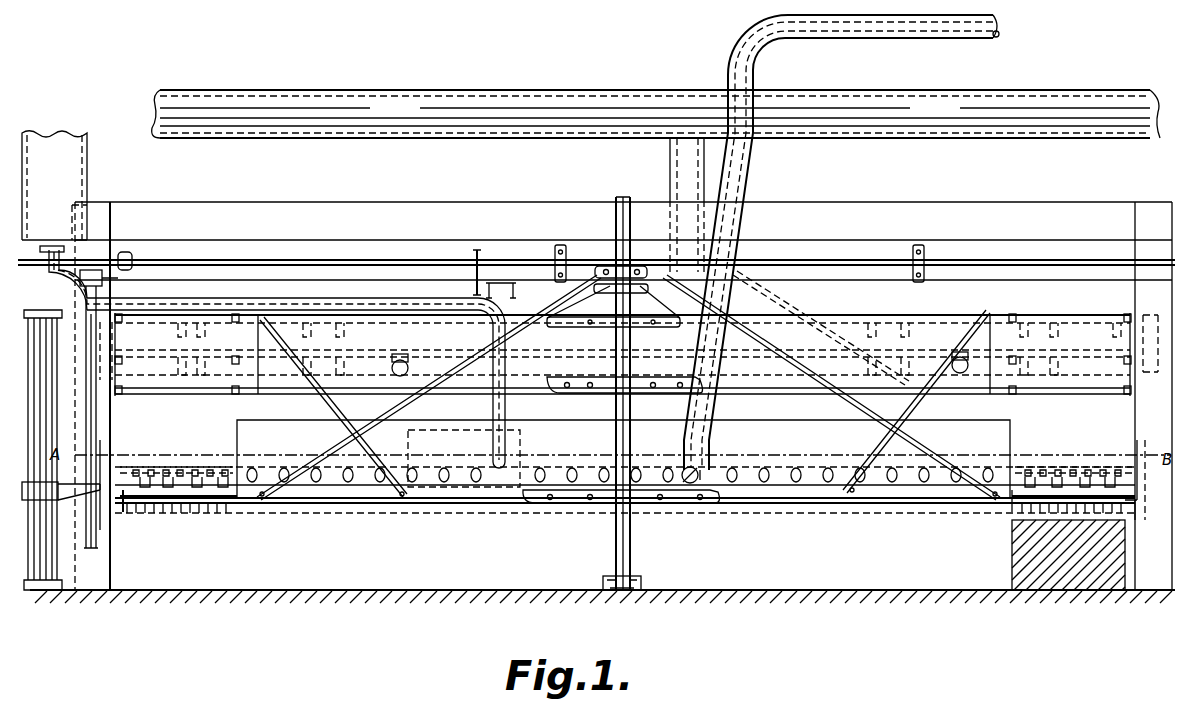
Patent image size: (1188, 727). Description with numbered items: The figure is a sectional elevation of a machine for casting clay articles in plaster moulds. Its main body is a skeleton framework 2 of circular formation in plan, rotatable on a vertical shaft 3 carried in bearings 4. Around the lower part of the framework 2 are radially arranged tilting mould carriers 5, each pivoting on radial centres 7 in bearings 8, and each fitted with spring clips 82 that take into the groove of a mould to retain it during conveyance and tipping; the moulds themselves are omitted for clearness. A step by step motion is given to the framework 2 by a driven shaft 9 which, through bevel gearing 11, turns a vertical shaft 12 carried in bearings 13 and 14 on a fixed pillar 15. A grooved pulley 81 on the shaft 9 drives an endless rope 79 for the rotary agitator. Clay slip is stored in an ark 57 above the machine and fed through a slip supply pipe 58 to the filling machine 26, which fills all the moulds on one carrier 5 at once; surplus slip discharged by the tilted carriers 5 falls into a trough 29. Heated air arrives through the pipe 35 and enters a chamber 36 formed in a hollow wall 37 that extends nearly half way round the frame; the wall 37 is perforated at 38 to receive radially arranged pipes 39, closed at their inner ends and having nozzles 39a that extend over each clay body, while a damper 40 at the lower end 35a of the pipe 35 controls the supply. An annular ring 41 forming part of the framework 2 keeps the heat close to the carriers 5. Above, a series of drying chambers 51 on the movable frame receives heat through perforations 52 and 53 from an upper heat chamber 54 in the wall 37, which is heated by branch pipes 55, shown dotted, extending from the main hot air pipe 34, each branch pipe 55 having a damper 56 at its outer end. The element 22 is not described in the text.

The skeleton framework 2 is at (150, 347).
The vertical shaft 3 is at (630, 198).
The bearings 4 is at (636, 266).
The mould carriers 5 is at (140, 506).
The radial centres 7 is at (122, 506).
The bearings 8 is at (125, 486).
The driven shaft 9 is at (33, 258).
The bevel gearing 11 is at (104, 270).
The vertical shaft 12 is at (86, 380).
The bearing 13 is at (64, 320).
The bearing 14 is at (72, 486).
The fixed pillar 15 is at (48, 422).
The end plate 22 is at (1134, 510).
The filling machine 26 is at (464, 458).
The trough 29 is at (1068, 553).
The main hot air pipe 34 is at (656, 114).
The pipe 35 is at (802, 47).
The lower end of pipe 35a is at (700, 468).
The chamber 36 is at (630, 483).
The wall 37 is at (417, 213).
The perforations 38 is at (1124, 467).
The radially arranged pipes 39 is at (173, 470).
The nozzles 39a is at (212, 470).
The damper 40 is at (724, 476).
The annular ring 41 is at (237, 424).
The upper chambers 51 is at (623, 354).
The perforations 52 is at (195, 330).
The perforations 53 is at (180, 355).
The upper heat chamber 54 is at (110, 349).
The branch pipes 55 is at (670, 163).
The damper 56 is at (402, 356).
The ark 57 is at (54, 185).
The slip supply pipe 58 is at (245, 304).
The endless rope 79 is at (501, 281).
The grooved pulley 81 is at (475, 254).
The spring clips 82 is at (208, 510).